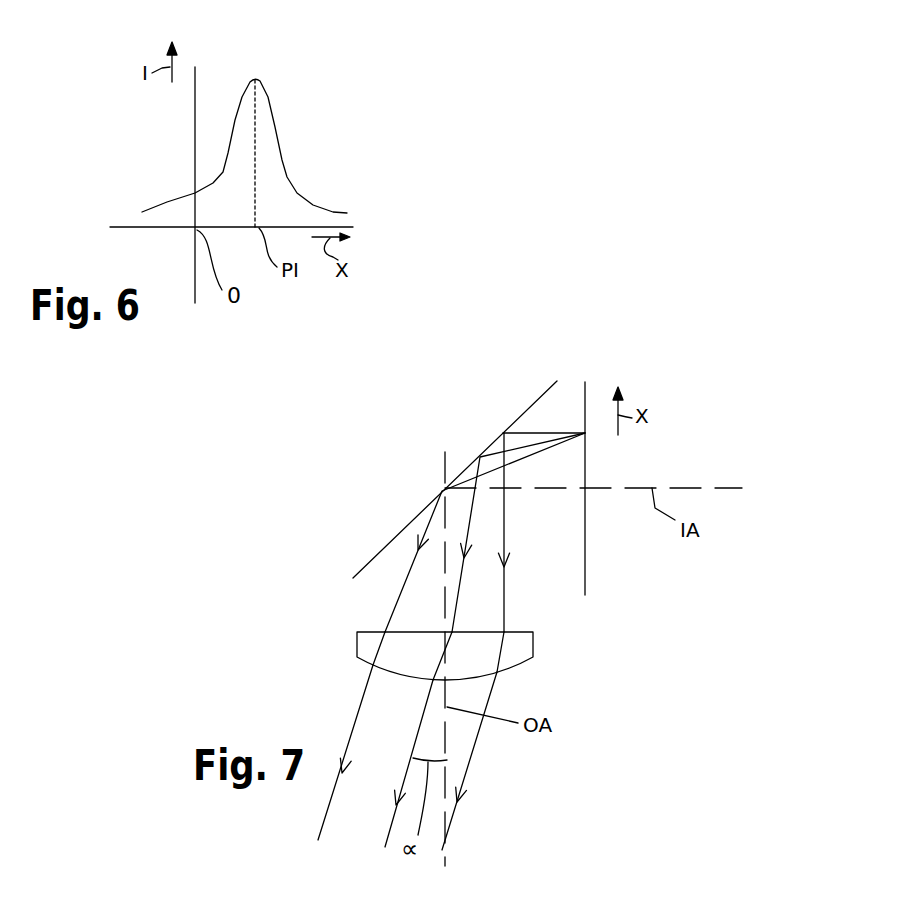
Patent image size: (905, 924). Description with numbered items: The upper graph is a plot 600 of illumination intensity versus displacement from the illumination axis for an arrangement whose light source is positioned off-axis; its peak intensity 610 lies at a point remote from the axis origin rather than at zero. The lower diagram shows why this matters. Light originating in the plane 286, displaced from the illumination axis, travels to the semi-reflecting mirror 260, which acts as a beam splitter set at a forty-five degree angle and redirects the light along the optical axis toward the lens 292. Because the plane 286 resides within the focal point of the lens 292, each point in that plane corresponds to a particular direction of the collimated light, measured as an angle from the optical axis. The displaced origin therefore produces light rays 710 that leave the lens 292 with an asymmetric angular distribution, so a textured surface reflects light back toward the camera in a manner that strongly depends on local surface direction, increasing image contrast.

In FIG. 6, the plot 600 is at (288, 121).
In FIG. 6, the peak intensity 610 is at (257, 79).
In FIG. 7, the semi-reflecting mirror 260 is at (520, 417).
In FIG. 7, the plane 286 is at (585, 553).
In FIG. 7, the lens group 292 is at (357, 642).
In FIG. 7, the light rays 710 is at (393, 815).